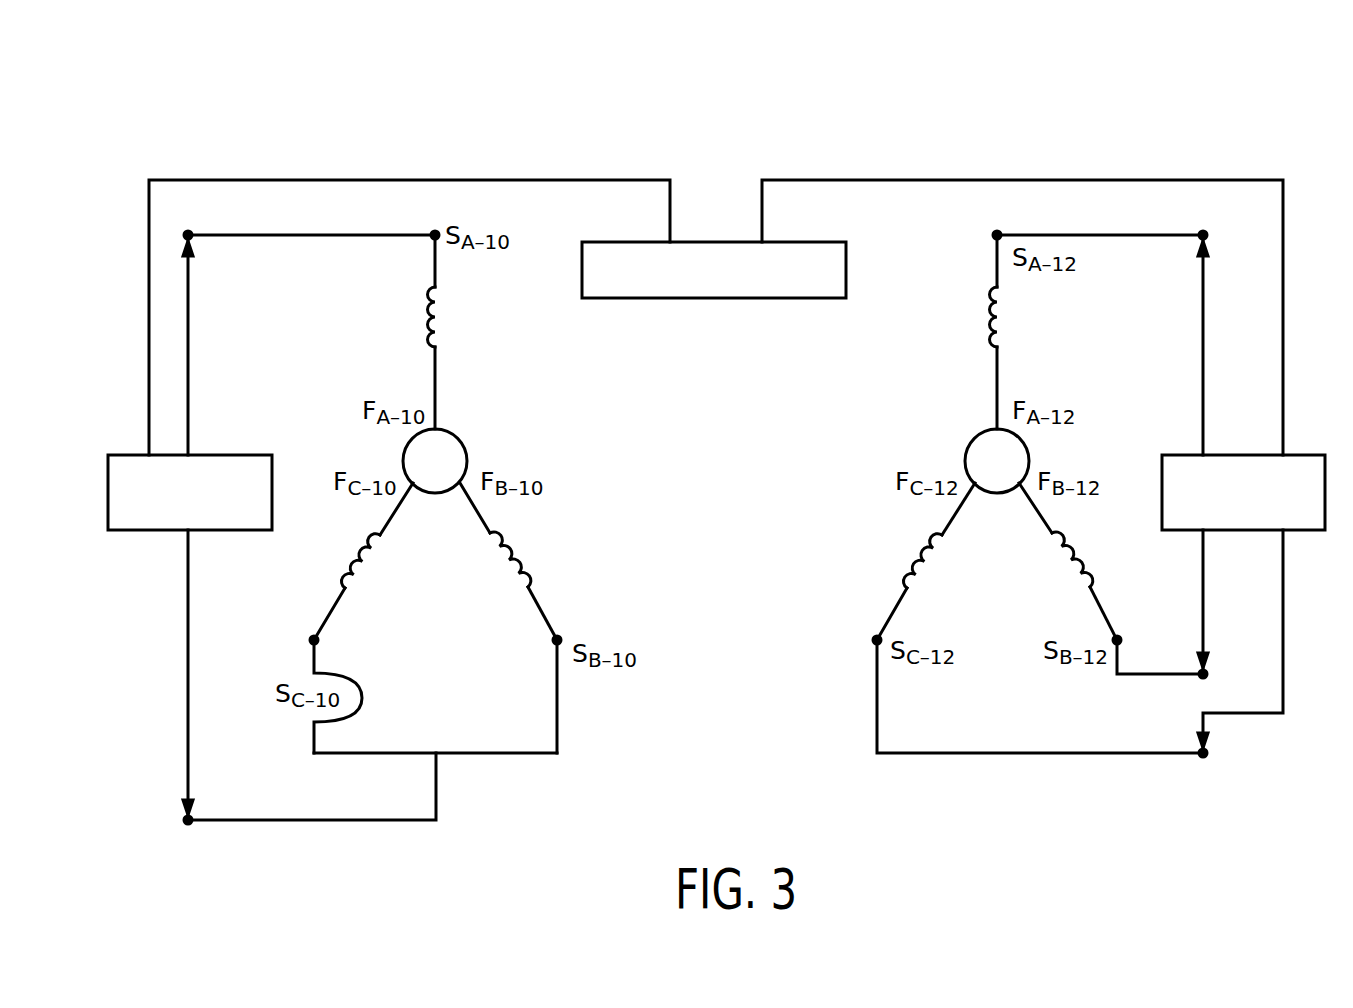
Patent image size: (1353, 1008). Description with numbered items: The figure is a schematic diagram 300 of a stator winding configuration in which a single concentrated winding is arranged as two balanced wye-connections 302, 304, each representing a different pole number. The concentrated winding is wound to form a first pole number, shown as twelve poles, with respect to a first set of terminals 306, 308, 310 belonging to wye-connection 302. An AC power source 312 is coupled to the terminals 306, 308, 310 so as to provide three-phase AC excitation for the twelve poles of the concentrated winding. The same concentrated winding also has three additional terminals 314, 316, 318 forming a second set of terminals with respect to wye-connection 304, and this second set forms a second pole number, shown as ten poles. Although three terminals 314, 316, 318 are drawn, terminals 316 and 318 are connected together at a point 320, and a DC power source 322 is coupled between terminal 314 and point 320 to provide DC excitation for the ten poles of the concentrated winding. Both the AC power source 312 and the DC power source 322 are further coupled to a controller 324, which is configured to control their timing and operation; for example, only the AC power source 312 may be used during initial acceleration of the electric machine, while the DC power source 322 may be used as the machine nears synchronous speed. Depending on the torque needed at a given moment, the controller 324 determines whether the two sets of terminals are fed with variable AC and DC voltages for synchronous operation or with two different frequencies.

The schematic diagram 300 is at (1032, 120).
The wye-connection 302 is at (942, 426).
The wye-connection 304 is at (490, 426).
The terminal 306 is at (997, 235).
The terminal 308 is at (1117, 640).
The terminal 310 is at (877, 640).
The AC power source 312 is at (1162, 490).
The terminal 314 is at (432, 240).
The terminal 316 is at (557, 640).
The terminal 318 is at (314, 640).
The point 320 is at (436, 756).
The DC power source 322 is at (108, 490).
The controller 324 is at (716, 300).